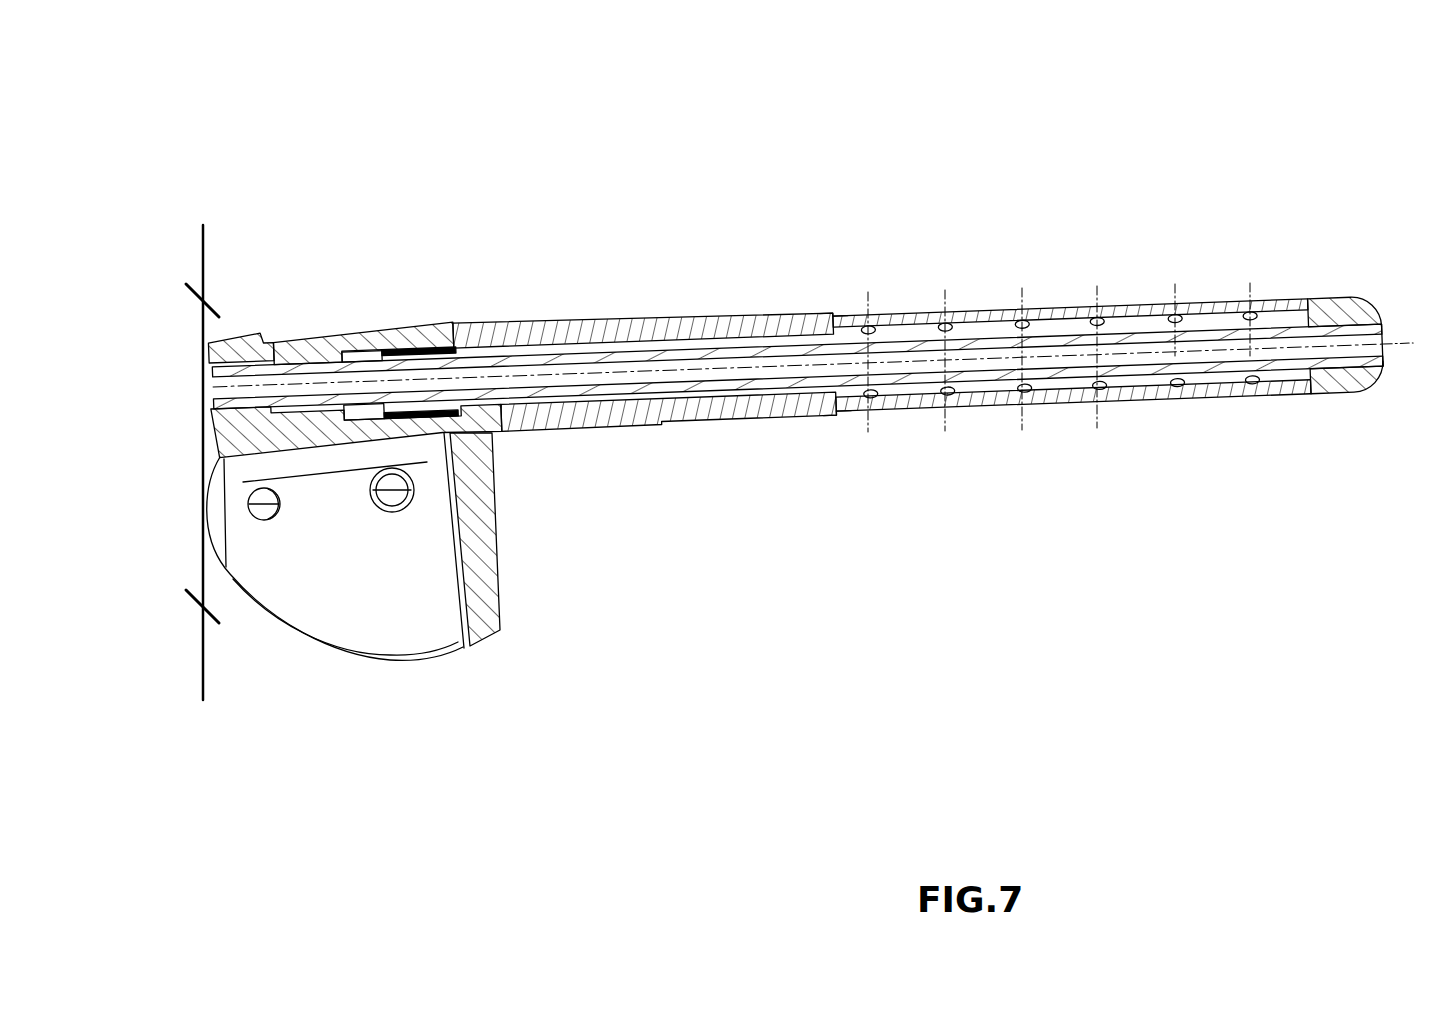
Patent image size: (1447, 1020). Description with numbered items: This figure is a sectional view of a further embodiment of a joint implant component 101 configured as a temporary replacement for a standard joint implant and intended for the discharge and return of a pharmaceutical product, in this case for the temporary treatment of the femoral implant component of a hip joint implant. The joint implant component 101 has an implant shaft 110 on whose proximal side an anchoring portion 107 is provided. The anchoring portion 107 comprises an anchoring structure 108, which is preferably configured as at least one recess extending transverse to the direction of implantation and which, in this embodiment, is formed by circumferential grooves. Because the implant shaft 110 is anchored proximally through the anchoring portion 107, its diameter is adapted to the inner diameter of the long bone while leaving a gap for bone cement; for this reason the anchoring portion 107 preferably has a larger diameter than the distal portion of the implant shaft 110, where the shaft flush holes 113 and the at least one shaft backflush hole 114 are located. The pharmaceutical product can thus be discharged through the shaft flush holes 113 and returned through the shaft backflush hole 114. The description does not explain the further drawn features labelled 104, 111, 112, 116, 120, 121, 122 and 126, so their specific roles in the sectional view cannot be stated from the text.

The joint implant component 101 is at (822, 108).
The proximal housing end 104 is at (218, 392).
The anchoring portion 107 is at (622, 265).
The anchoring structure 108 is at (665, 420).
The implant shaft 110 is at (956, 272).
The shoulder 111 is at (813, 410).
The inner shaft 112 is at (760, 372).
The shaft flush holes 113 is at (1110, 412).
The shaft backflush hole 114 is at (1386, 344).
The seal 116 is at (420, 326).
The mounting bracket 120 is at (358, 680).
The lower housing wall 121 is at (240, 416).
The proximal grip wall 122 is at (300, 390).
The seal 126 is at (421, 414).